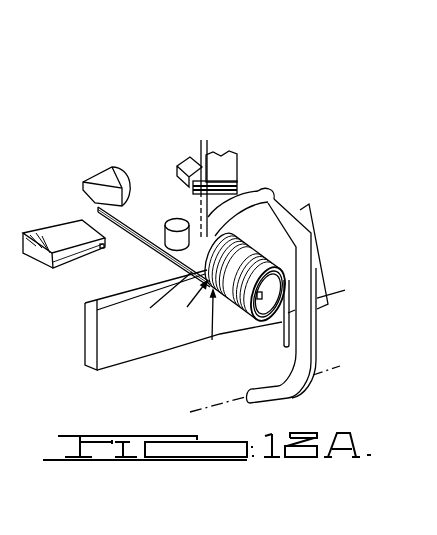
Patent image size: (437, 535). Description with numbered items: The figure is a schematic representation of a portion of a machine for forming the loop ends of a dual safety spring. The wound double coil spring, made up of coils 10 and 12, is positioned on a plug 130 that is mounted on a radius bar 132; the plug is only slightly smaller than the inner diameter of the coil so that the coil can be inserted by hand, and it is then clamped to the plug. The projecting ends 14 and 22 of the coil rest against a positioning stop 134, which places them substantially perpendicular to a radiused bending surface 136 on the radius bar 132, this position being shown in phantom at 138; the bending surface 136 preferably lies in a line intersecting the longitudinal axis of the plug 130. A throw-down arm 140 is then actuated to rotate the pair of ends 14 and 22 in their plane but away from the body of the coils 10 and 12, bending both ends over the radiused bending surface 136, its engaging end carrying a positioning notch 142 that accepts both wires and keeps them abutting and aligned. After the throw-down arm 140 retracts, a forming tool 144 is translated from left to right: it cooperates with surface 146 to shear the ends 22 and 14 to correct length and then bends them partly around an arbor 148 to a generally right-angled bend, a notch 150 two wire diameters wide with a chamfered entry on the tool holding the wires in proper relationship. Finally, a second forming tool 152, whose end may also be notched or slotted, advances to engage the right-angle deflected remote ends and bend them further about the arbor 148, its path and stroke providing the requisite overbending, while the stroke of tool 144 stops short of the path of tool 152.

The coil 10 is at (186, 312).
The coil 12 is at (209, 335).
The projecting end 14 is at (137, 239).
The projecting end 22 is at (138, 244).
The plug 130 is at (278, 287).
The radius bar 132 is at (130, 358).
The positioning stop 134 is at (193, 156).
The radiused bending surface 136 is at (147, 311).
The phantom position 138 is at (252, 188).
The throw-down arm 140 is at (307, 338).
The positioning notch 142 is at (266, 197).
The forming tool 144 is at (52, 233).
The shearing surface 146 is at (100, 183).
The arbor 148 is at (176, 220).
The notch 150 is at (89, 256).
The forming tool 152 is at (230, 167).